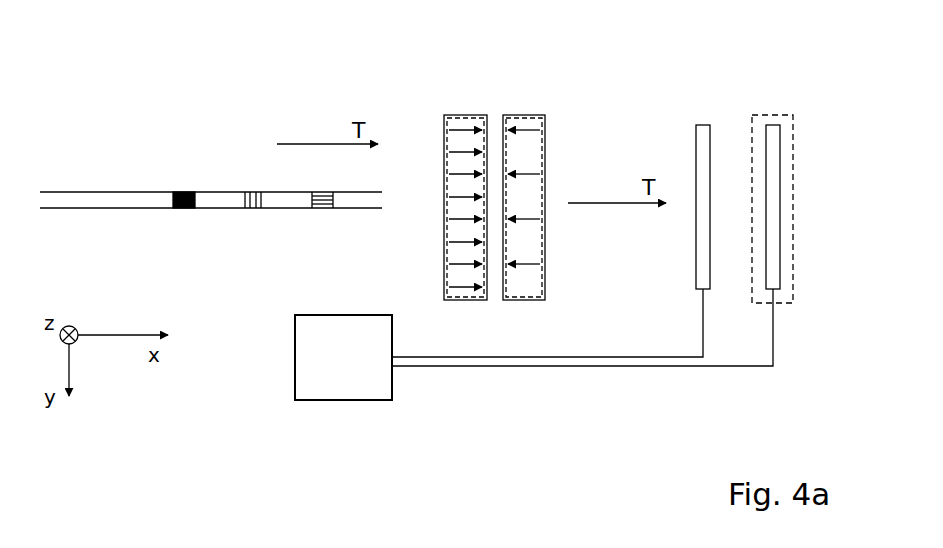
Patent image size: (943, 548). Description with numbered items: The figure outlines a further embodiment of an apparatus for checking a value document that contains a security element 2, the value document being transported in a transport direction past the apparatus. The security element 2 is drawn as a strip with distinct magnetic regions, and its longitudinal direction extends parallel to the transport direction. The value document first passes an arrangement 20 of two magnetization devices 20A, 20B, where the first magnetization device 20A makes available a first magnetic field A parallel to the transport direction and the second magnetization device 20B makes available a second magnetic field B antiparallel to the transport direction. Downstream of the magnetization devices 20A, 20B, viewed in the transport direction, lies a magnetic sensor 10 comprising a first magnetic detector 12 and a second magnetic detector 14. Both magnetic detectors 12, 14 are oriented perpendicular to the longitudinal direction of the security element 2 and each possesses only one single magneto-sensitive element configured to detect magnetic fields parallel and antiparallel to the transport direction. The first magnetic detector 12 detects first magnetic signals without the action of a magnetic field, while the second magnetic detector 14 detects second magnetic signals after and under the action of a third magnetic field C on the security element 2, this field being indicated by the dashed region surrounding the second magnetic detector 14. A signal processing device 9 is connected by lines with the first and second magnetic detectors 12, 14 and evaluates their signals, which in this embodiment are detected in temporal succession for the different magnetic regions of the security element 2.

The security element 2 is at (92, 192).
The signal processing device 9 is at (335, 315).
The magnetic sensor 10 is at (748, 155).
The first magnetic detector 12 is at (703, 125).
The second magnetic detector 14 is at (774, 125).
The arrangement of magnetization devices 20 is at (495, 155).
The first magnetization device 20A is at (467, 115).
The second magnetization device 20B is at (514, 115).
The first magnetic field A is at (449, 118).
The second magnetic field B is at (541, 118).
The third magnetic field C is at (770, 115).